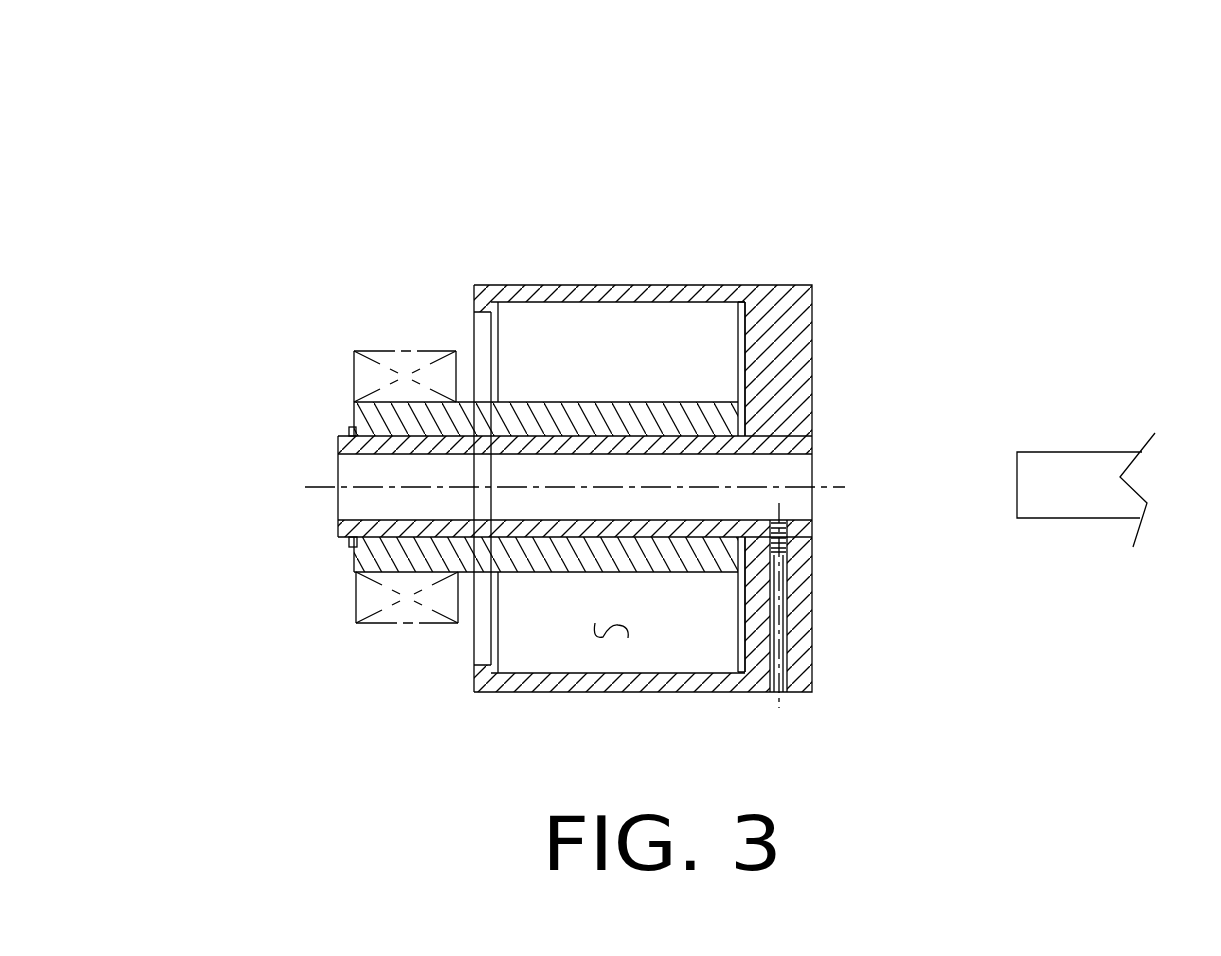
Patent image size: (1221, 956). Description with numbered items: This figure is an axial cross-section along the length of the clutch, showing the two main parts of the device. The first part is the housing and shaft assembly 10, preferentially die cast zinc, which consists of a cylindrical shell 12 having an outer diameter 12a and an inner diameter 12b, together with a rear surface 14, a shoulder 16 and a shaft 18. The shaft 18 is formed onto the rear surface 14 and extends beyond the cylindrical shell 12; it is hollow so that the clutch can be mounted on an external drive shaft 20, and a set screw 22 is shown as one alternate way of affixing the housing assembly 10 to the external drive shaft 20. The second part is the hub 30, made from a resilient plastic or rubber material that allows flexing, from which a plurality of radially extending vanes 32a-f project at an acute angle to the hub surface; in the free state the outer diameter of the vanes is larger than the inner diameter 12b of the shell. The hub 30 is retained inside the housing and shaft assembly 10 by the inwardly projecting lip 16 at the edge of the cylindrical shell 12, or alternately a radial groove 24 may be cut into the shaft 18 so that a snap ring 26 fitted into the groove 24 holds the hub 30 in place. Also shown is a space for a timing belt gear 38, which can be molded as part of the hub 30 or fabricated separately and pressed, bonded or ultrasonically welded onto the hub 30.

The housing and shaft assembly 10 is at (633, 148).
The cylindrical shell 12 is at (815, 287).
The outer diameter 12a is at (760, 287).
The inner diameter 12b is at (613, 287).
The rear surface 14 is at (745, 377).
The shoulder 16 is at (473, 300).
The shaft 18 is at (341, 529).
The external drive shaft 20 is at (1068, 452).
The set screw 22 is at (787, 548).
The radial groove 24 is at (339, 442).
The snap ring 26 is at (350, 431).
The hub 30 is at (333, 632).
The radially extending vanes 32a-f is at (603, 637).
The timing belt gear 38 is at (385, 351).